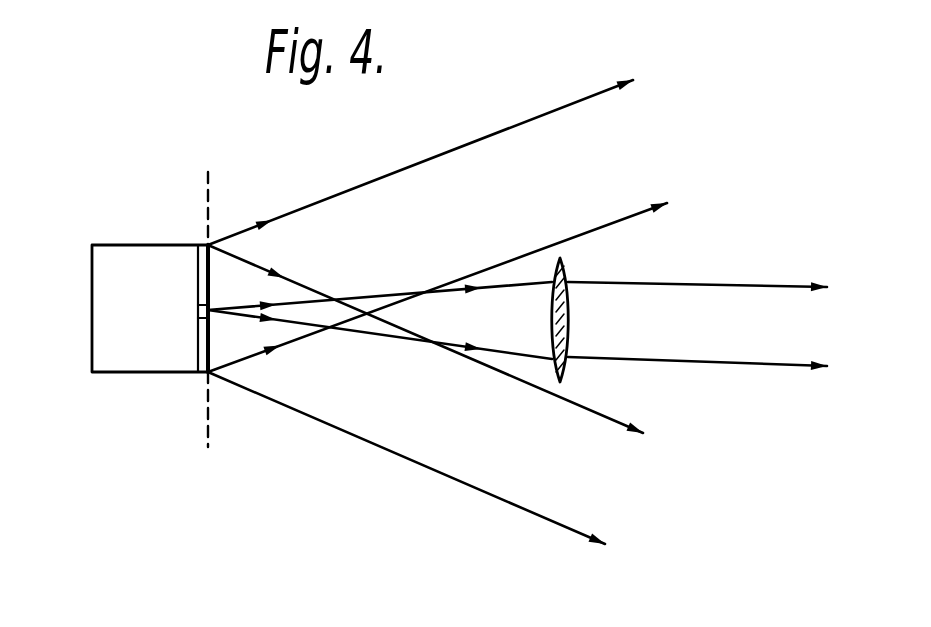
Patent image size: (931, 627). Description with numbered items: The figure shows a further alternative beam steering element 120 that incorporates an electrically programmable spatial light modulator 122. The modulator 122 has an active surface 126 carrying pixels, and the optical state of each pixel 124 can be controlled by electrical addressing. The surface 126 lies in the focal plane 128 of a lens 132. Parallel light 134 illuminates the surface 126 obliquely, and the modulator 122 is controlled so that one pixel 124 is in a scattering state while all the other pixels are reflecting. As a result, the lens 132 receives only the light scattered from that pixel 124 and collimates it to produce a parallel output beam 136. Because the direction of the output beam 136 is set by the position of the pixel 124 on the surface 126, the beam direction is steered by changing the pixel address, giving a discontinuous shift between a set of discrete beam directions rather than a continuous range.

The beam steering element 120 is at (460, 531).
The electrically programmable spatial light modulator 122 is at (155, 373).
The pixel 124 is at (198, 309).
The active surface 126 is at (198, 273).
The focal plane 128 is at (210, 412).
The lens 132 is at (562, 262).
The parallel light 134 is at (632, 491).
The parallel output beam 136 is at (843, 342).